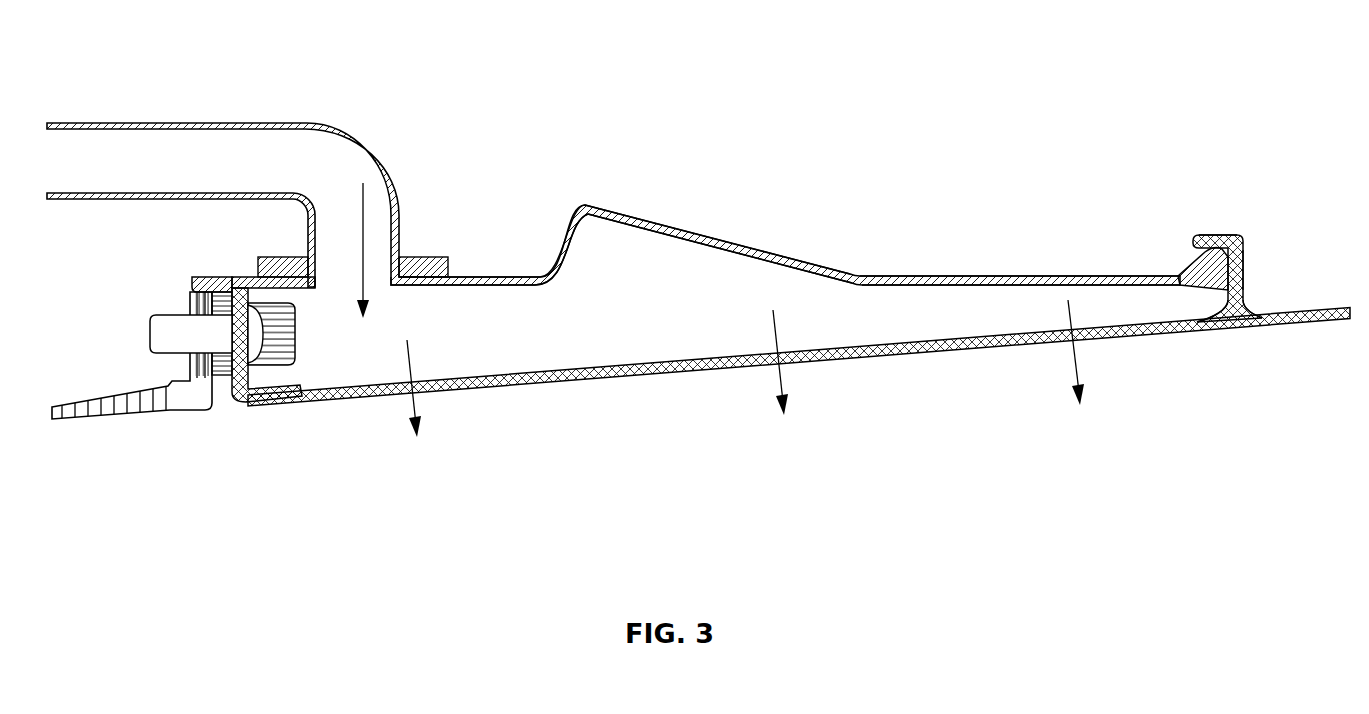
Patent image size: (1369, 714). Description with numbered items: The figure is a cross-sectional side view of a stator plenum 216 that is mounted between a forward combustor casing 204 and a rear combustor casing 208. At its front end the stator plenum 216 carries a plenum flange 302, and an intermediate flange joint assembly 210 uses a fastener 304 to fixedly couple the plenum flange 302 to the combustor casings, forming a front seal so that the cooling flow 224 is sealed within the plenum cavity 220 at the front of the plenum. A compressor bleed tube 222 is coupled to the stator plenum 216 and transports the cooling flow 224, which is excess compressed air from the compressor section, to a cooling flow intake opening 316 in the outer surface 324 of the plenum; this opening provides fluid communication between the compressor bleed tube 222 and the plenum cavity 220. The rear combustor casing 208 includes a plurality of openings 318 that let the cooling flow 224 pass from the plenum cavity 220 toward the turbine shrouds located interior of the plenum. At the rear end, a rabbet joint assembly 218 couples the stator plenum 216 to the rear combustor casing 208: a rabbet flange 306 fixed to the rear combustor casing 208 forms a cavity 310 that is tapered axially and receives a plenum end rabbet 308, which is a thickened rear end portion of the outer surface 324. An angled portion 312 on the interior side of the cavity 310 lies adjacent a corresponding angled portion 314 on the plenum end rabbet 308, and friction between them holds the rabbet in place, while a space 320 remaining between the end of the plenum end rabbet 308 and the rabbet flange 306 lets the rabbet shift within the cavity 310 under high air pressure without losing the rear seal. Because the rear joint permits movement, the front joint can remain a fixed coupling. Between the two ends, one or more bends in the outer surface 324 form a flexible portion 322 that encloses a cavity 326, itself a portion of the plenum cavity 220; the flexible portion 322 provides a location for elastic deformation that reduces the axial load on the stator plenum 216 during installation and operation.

The forward combustor casing 204 is at (88, 419).
The rear combustor casing 208 is at (546, 386).
The intermediate flange joint assembly 210 is at (181, 332).
The stator plenum 216 is at (681, 148).
The rabbet joint assembly 218 is at (1244, 240).
The plenum cavity 220 is at (498, 353).
The compressor bleed tube 222 is at (232, 123).
The cooling flow 224 is at (363, 219).
The plenum flange 302 is at (240, 280).
The fastener 304 is at (273, 366).
The rabbet flange 306 is at (1219, 235).
The plenum end rabbet 308 is at (1197, 262).
The cavity 310 is at (1245, 262).
The angled portion 312 is at (1240, 319).
The angled portion 314 is at (1215, 325).
The cooling flow intake opening 316 is at (391, 286).
The plurality of openings 318 is at (410, 398).
The space 320 is at (1237, 247).
The flexible portion 322 is at (578, 204).
The outer surface 324 is at (893, 276).
The cavity 326 is at (623, 271).